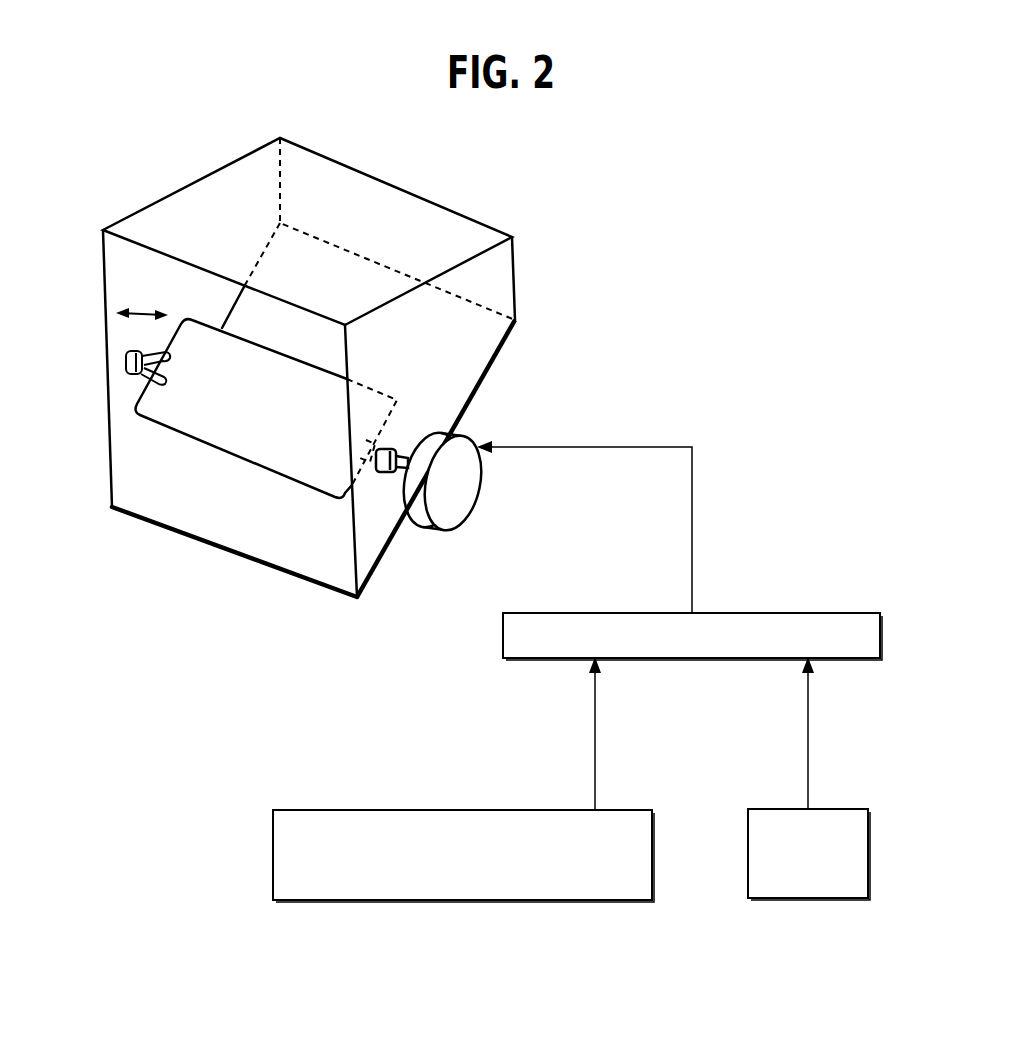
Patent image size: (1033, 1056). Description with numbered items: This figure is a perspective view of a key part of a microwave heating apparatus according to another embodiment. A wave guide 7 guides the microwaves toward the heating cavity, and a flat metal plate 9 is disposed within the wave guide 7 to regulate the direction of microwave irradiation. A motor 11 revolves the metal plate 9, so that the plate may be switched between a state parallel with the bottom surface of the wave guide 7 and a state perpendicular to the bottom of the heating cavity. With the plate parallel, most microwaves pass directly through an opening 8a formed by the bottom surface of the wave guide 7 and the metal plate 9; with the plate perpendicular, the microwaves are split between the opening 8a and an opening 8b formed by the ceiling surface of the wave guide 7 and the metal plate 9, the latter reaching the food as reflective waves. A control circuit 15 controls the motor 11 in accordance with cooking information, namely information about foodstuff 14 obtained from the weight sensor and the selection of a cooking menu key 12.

The wave guide 7 is at (490, 372).
The opening 8a is at (182, 508).
The opening 8b is at (117, 296).
The metal plate 9 is at (312, 468).
The motor 11 is at (473, 507).
The cooking menu key 12 is at (837, 808).
The information about foodstuff 14 is at (412, 810).
The control circuit 15 is at (798, 612).